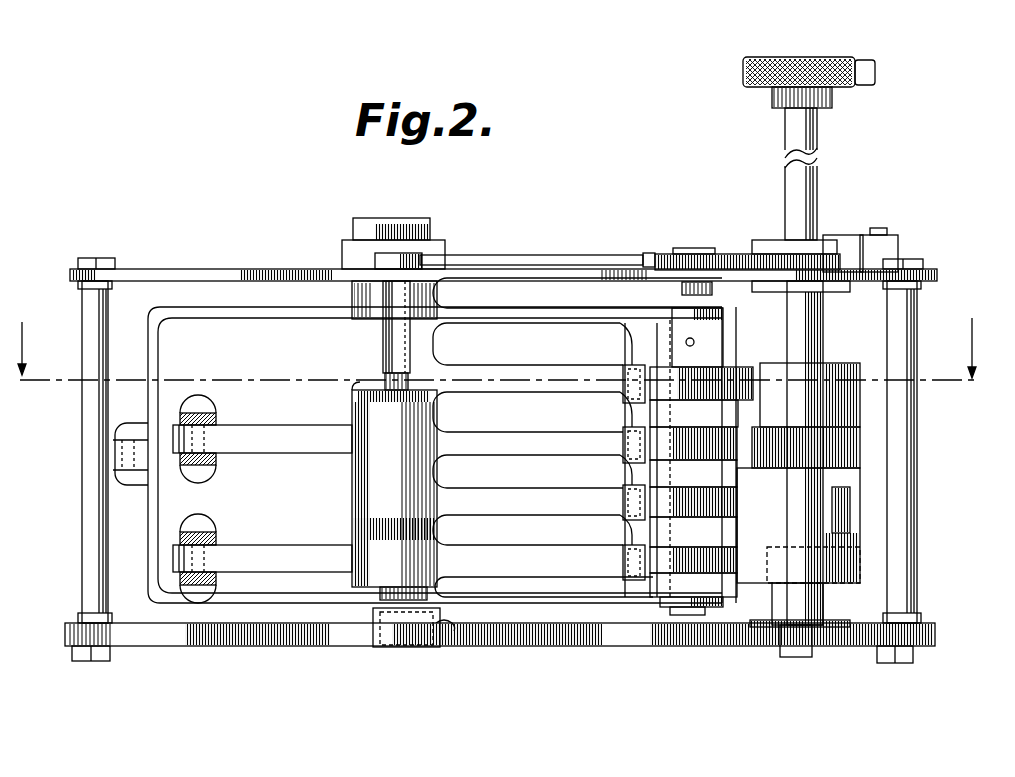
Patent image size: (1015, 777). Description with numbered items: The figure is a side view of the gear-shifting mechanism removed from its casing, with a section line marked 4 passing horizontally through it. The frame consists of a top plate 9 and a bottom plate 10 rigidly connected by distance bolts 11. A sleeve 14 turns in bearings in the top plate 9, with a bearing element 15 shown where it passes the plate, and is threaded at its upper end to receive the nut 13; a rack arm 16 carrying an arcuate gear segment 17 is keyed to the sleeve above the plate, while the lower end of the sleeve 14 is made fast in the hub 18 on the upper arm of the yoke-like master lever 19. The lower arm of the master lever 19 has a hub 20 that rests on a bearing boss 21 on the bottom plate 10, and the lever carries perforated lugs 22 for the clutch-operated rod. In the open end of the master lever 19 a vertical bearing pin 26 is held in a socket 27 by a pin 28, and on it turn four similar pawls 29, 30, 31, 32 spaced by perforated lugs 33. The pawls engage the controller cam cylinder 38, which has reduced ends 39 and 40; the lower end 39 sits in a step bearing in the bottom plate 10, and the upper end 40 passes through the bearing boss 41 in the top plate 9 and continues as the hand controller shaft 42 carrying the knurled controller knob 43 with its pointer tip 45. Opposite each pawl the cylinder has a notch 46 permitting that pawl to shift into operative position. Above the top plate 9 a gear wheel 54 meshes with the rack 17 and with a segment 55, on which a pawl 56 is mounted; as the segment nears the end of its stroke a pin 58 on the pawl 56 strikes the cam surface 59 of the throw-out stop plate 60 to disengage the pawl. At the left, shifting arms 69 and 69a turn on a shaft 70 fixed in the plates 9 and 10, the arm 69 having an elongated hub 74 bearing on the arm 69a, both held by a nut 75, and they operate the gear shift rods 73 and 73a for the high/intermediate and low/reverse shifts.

The section line 4 is at (494, 336).
The top plate 9 is at (216, 279).
The bottom plate 10 is at (256, 640).
The distance bolts 11 is at (84, 470).
The nut 13 is at (420, 230).
The sleeve 14 is at (464, 272).
The bushing 15 is at (446, 244).
The rack arm 16 is at (538, 256).
The arcuate gear segment 17 is at (646, 254).
The hub 18 is at (348, 300).
The master lever 19 is at (218, 318).
The hub 20 is at (366, 609).
The bearing boss 21 is at (446, 630).
The perforated lugs 22 is at (112, 437).
The bearing pin 26 is at (692, 614).
The socket 27 is at (724, 345).
The pin 28 is at (680, 332).
The pawl 29 is at (655, 378).
The pawl 30 is at (655, 435).
The pawl 31 is at (655, 495).
The pawl 32 is at (655, 555).
The perforated lugs 33 is at (648, 583).
The controller cam cylinder 38 is at (815, 500).
The reduced end 39 is at (797, 656).
The reduced end 40 is at (822, 342).
The bearing boss 41 is at (838, 292).
The hand controller shaft 42 is at (818, 222).
The controller knob 43 is at (792, 62).
The pointer tip 45 is at (876, 72).
The notch 46 is at (756, 375).
The gear wheel 54 is at (676, 250).
The segment 55 is at (746, 254).
The pawl 56 is at (778, 242).
The pin 58 is at (833, 238).
The cam surface 59 is at (876, 232).
The throw-out stop plate 60 is at (900, 252).
The shifting arm 69 is at (280, 440).
The shifting arm 69a is at (270, 546).
The shaft 70 is at (350, 384).
The rod 73 is at (214, 456).
The gear shift rod 73a is at (208, 532).
The elongated hub 74 is at (355, 477).
The nut 75 is at (410, 382).